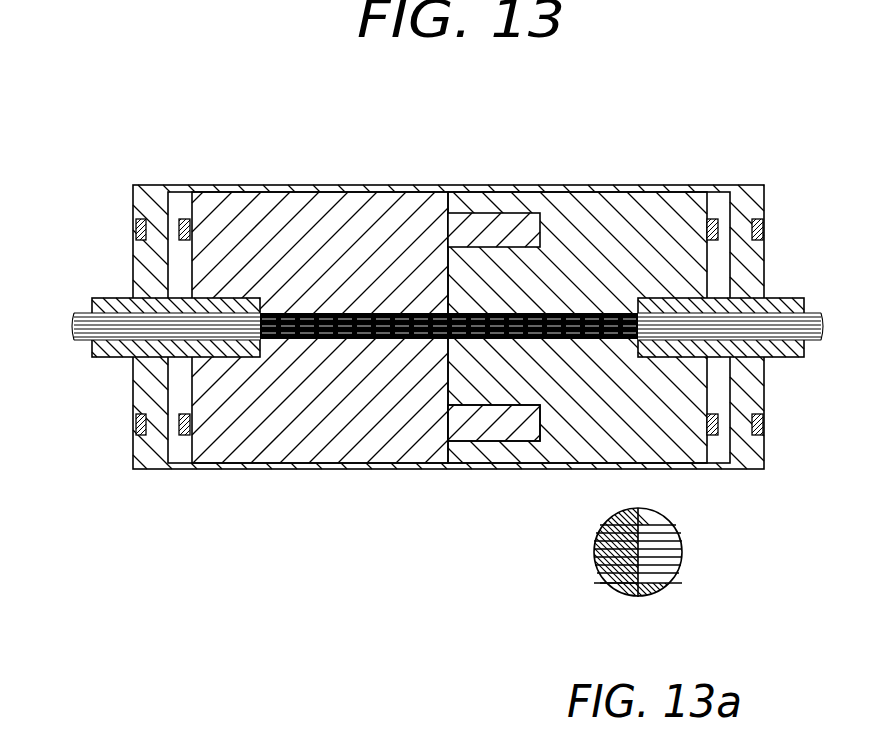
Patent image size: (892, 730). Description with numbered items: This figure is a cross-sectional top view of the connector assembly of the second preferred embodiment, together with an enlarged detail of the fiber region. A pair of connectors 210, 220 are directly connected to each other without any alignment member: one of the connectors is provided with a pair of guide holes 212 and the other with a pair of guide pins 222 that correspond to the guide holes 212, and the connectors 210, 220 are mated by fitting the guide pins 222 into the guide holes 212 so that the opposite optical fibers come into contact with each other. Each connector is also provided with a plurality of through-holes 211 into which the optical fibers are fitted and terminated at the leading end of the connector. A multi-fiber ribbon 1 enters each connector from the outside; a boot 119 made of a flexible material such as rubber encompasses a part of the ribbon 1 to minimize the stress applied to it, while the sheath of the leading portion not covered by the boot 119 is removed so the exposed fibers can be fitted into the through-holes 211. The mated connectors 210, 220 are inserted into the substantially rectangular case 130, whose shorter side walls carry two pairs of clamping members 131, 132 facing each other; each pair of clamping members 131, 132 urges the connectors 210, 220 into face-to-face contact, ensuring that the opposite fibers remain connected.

In FIG. 13, the multi-fiber ribbon 1 is at (110, 325).
In FIG. 13A, the multi-fiber ribbon 1 is at (668, 557).
In FIG. 13A, the boot 119 is at (650, 590).
In FIG. 13, the case 130 is at (762, 178).
In FIG. 13, the clamping member 131 is at (140, 435).
In FIG. 13, the clamping member 132 is at (180, 220).
In FIG. 13, the connector 210 is at (615, 206).
In FIG. 13A, the connector 210 is at (632, 592).
In FIG. 13A, the through-hole 211 is at (606, 588).
In FIG. 13, the guide hole 212 is at (536, 441).
In FIG. 13, the connector 220 is at (251, 206).
In FIG. 13, the guide pin 222 is at (472, 423).